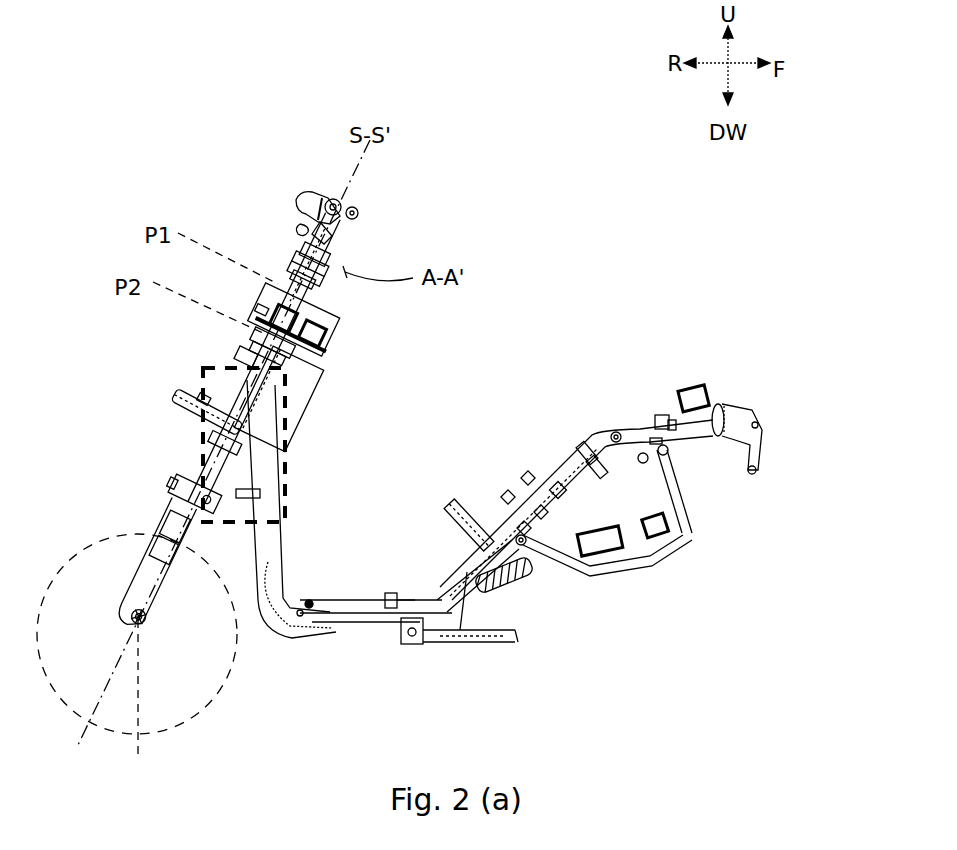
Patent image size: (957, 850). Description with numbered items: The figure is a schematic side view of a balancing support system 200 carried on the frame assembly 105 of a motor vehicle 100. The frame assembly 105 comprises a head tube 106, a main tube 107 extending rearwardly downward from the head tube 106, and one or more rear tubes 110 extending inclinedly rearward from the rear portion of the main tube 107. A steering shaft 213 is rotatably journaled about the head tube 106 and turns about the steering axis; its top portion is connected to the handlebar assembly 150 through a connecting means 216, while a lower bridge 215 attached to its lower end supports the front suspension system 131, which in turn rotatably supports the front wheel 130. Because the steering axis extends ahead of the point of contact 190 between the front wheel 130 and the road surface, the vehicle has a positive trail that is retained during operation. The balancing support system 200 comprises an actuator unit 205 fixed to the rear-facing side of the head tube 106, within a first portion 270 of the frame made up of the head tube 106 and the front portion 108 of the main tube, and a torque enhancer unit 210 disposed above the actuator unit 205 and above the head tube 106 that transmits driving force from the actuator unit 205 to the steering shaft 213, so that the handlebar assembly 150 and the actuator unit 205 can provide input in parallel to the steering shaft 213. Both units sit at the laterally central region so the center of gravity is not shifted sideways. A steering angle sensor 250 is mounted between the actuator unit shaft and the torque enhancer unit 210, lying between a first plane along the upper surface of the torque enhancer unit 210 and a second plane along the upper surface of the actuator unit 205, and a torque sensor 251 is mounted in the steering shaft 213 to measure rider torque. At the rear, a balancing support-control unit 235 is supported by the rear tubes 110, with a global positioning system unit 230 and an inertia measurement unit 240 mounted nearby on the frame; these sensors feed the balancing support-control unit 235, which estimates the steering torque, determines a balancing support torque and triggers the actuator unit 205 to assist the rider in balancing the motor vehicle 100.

The motor vehicle 100 is at (234, 188).
The frame assembly 105 is at (326, 582).
The head tube 106 is at (247, 383).
The main tube 107 is at (270, 527).
The front portion of the main tube 108 is at (240, 440).
The rear tubes 110 is at (593, 440).
The front wheel 130 is at (220, 695).
The front suspension system 131 is at (135, 583).
The handlebar assembly 150 is at (313, 190).
The point of contact 190 is at (158, 696).
The balancing support system 200 is at (354, 369).
The actuator unit 205 is at (300, 390).
The torque enhancer unit 210 is at (325, 315).
The steering shaft 213 is at (267, 340).
The lower bridge 215 is at (182, 485).
The connecting means 216 is at (300, 263).
The global positioning system (GPS) unit 230 is at (692, 397).
The balancing support-control unit 235 is at (600, 540).
The inertia measurement unit 240 is at (662, 523).
The steering angle sensor 250 is at (327, 337).
The torque sensor 251 is at (273, 305).
The first portion 270 is at (287, 458).